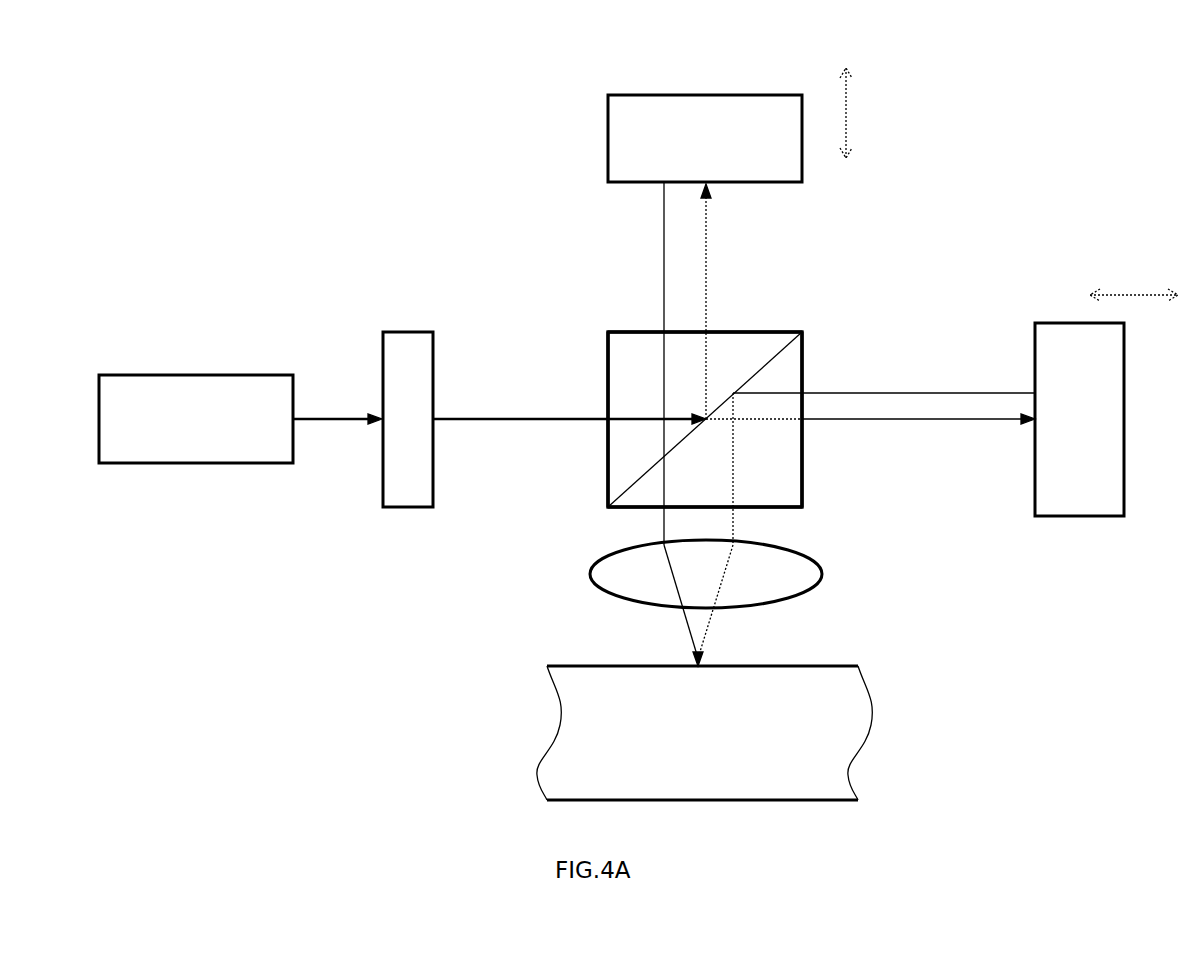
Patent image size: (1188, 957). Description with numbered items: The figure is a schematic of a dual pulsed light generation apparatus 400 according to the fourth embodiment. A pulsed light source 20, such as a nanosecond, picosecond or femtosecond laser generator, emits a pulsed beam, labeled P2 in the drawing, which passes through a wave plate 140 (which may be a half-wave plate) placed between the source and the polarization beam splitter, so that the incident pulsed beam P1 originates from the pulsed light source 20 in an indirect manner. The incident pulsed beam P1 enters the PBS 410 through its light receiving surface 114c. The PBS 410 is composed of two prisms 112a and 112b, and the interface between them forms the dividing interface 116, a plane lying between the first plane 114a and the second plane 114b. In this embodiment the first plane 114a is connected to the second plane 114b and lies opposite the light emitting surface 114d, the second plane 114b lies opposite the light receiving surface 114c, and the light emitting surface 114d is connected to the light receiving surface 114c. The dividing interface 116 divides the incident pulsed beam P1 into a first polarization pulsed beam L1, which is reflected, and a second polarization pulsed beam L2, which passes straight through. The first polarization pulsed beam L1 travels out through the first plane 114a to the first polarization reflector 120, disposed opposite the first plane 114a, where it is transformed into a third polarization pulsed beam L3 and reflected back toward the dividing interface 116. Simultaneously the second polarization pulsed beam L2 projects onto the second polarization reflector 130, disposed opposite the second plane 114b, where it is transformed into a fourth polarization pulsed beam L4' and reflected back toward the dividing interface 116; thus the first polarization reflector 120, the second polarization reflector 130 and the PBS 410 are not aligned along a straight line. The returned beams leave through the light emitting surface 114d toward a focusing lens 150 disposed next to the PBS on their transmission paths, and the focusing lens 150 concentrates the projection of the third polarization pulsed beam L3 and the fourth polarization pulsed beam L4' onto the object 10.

The object 10 is at (850, 733).
The pulsed light source 20 is at (211, 432).
The first polarization reflector 120 is at (727, 147).
The second polarization reflector 130 is at (1102, 422).
The wave plate 140 is at (407, 343).
The focusing lens 150 is at (802, 585).
The prism 112a is at (617, 348).
The prism 112b is at (782, 497).
The first plane 114a is at (765, 325).
The second plane 114b is at (812, 353).
The light receiving surface 114c is at (600, 458).
The light emitting surface 114d is at (632, 512).
The dividing interface 116 is at (783, 342).
The dual pulsed light generation apparatus 400 is at (998, 135).
The PBS 410 is at (567, 255).
The first polarization pulsed beam L1 is at (707, 220).
The second polarization pulsed beam L2 is at (960, 422).
The third polarization pulsed beam L3 is at (664, 224).
The fourth polarization pulsed beam L4' is at (888, 390).
The incident pulsed beam P1 is at (492, 420).
The second polarized light P2 is at (327, 422).